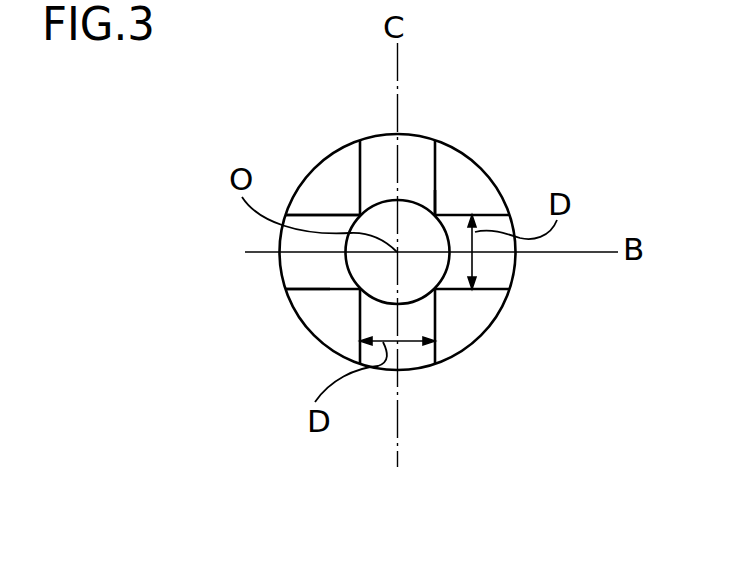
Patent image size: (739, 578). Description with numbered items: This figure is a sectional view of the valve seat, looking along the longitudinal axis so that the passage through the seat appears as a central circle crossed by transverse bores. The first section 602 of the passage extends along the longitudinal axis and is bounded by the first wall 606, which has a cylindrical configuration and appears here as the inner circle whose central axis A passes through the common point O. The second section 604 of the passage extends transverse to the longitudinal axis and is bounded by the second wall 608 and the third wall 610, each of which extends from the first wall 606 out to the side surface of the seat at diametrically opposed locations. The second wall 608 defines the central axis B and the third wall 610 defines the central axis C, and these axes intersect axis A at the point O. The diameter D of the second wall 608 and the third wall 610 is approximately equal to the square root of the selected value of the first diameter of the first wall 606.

The first section 602 is at (417, 280).
The second section 604 is at (295, 243).
The first wall 606 is at (425, 208).
The second wall 608 is at (302, 289).
The third wall 610 is at (435, 182).